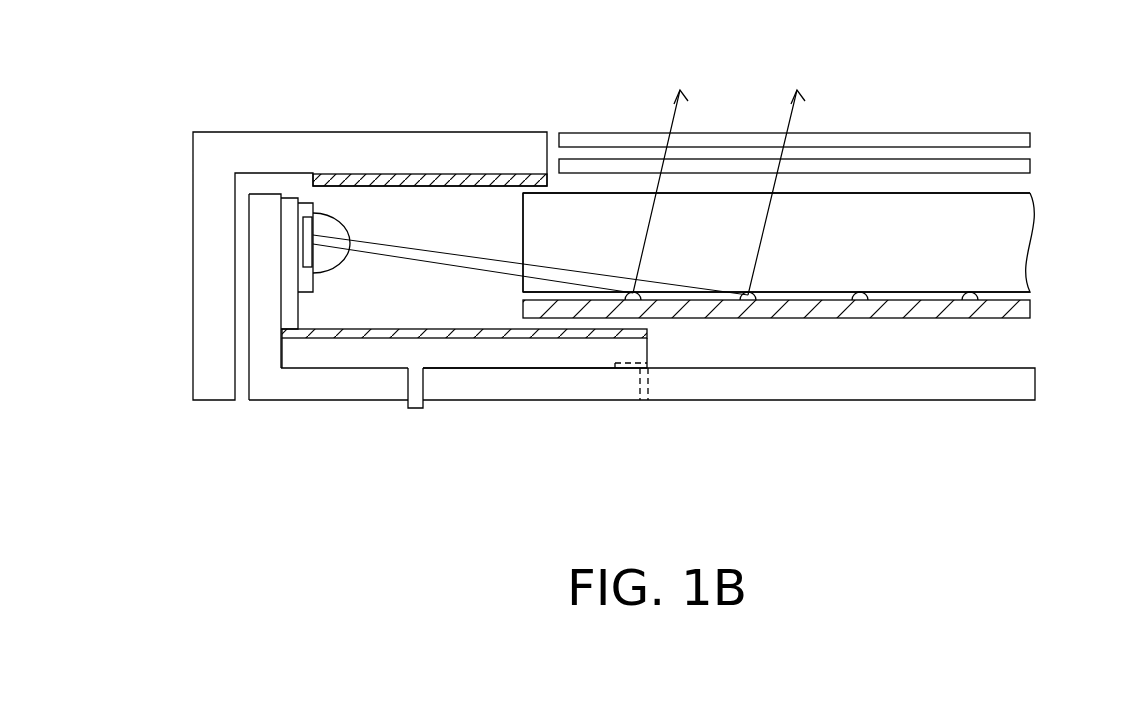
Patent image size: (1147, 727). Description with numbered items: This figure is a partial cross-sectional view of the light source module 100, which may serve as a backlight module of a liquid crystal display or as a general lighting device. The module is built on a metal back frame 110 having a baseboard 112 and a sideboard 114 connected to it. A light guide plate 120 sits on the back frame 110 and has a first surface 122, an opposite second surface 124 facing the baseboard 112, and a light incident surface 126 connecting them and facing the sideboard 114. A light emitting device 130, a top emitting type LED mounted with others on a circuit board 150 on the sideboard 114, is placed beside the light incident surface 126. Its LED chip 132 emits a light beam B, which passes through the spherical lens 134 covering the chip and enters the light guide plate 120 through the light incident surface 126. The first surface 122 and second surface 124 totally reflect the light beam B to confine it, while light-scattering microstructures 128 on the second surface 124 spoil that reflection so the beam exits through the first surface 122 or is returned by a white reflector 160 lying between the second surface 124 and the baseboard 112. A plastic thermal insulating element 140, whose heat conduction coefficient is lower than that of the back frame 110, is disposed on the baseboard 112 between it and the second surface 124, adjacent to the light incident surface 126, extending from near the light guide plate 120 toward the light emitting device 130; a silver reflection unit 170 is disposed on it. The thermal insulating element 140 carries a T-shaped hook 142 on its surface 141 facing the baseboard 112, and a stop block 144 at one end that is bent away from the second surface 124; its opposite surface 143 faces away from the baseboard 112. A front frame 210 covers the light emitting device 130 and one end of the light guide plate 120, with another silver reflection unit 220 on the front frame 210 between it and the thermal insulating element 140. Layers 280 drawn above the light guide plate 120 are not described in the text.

The light source module 100 is at (1113, 475).
The back frame 110 is at (631, 348).
The baseboard 112 is at (323, 390).
The sideboard 114 is at (260, 350).
The light guide plate 120 is at (1015, 247).
The first surface 122 is at (958, 192).
The second surface 124 is at (923, 300).
The light incident surface 126 is at (524, 214).
The light-scattering microstructures 128 is at (860, 300).
The light emitting device 130 is at (303, 208).
The LED chip 132 is at (310, 225).
The spherical lens 134 is at (338, 230).
The thermal insulating element 140 is at (602, 353).
The surface 141 is at (553, 370).
The T-shaped hook 142 is at (418, 410).
The surface 143 is at (352, 322).
The stop block 144 is at (643, 403).
The circuit board 150 is at (290, 198).
The reflector 160 is at (788, 312).
The reflection unit 170 is at (500, 332).
The front frame 210 is at (205, 260).
The reflection unit 220 is at (462, 182).
The optical films 280 is at (1030, 167).
The light beam B is at (450, 265).